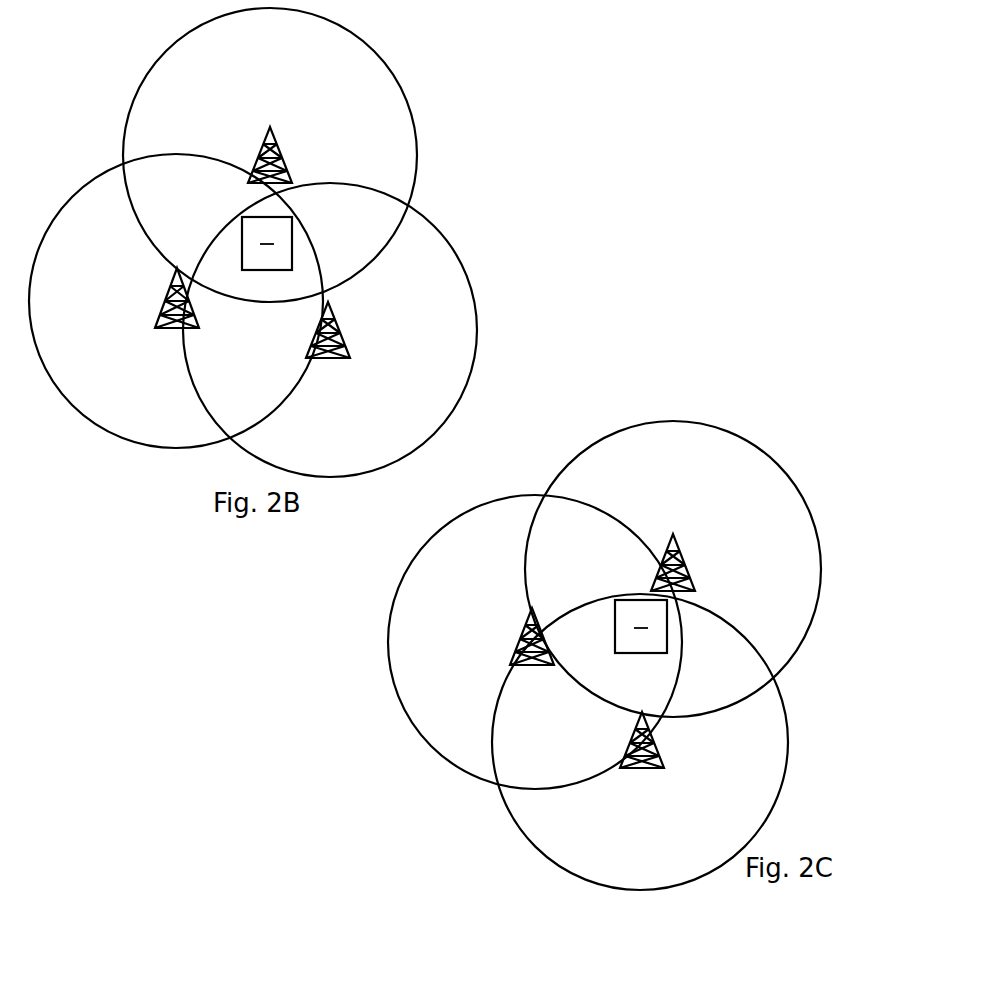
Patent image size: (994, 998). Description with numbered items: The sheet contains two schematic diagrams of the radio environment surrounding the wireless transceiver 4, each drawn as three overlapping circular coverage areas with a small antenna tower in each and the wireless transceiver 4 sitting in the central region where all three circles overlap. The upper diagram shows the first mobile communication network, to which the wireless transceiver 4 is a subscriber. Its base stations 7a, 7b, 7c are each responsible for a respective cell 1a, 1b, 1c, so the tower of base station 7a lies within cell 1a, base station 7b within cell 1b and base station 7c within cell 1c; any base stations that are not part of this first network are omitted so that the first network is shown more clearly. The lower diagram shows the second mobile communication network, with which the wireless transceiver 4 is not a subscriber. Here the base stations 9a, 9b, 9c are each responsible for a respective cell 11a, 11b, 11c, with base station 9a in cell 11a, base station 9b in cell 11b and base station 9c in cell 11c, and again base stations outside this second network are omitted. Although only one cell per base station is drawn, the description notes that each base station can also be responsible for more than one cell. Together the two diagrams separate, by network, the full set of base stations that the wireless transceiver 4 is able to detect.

In FIG. 2B, the cell 1a is at (181, 43).
In FIG. 2B, the cell 1b is at (430, 222).
In FIG. 2B, the cell 1c is at (117, 437).
In FIG. 2B, the wireless transceiver 4 is at (267, 243).
In FIG. 2C, the wireless transceiver 4 is at (641, 626).
In FIG. 2B, the base station 7a is at (280, 147).
In FIG. 2B, the base station 7b is at (338, 322).
In FIG. 2B, the base station 7c is at (188, 287).
In FIG. 2C, the base station 9a is at (538, 630).
In FIG. 2C, the base station 9b is at (683, 553).
In FIG. 2C, the base station 9c is at (657, 750).
In FIG. 2C, the cell 11a is at (517, 495).
In FIG. 2C, the cell 11b is at (727, 428).
In FIG. 2C, the cell 11c is at (510, 812).